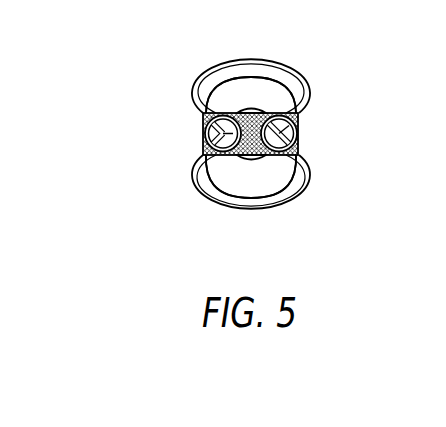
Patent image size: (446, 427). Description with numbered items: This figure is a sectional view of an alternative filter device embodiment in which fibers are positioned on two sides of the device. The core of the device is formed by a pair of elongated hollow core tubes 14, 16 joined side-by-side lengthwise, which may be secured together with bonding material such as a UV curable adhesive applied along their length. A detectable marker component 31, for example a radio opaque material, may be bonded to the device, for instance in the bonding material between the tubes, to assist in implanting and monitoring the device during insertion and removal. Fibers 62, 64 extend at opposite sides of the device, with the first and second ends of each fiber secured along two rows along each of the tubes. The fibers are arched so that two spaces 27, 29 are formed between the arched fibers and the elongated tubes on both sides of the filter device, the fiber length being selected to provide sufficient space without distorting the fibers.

The fiber 62 is at (258, 57).
The space 27 is at (271, 99).
The elongated hollow core tube 16 is at (203, 130).
The detectable marker component 31 is at (245, 160).
The elongated hollow core tube 14 is at (275, 162).
The fiber 64 is at (260, 180).
The space 29 is at (264, 192).